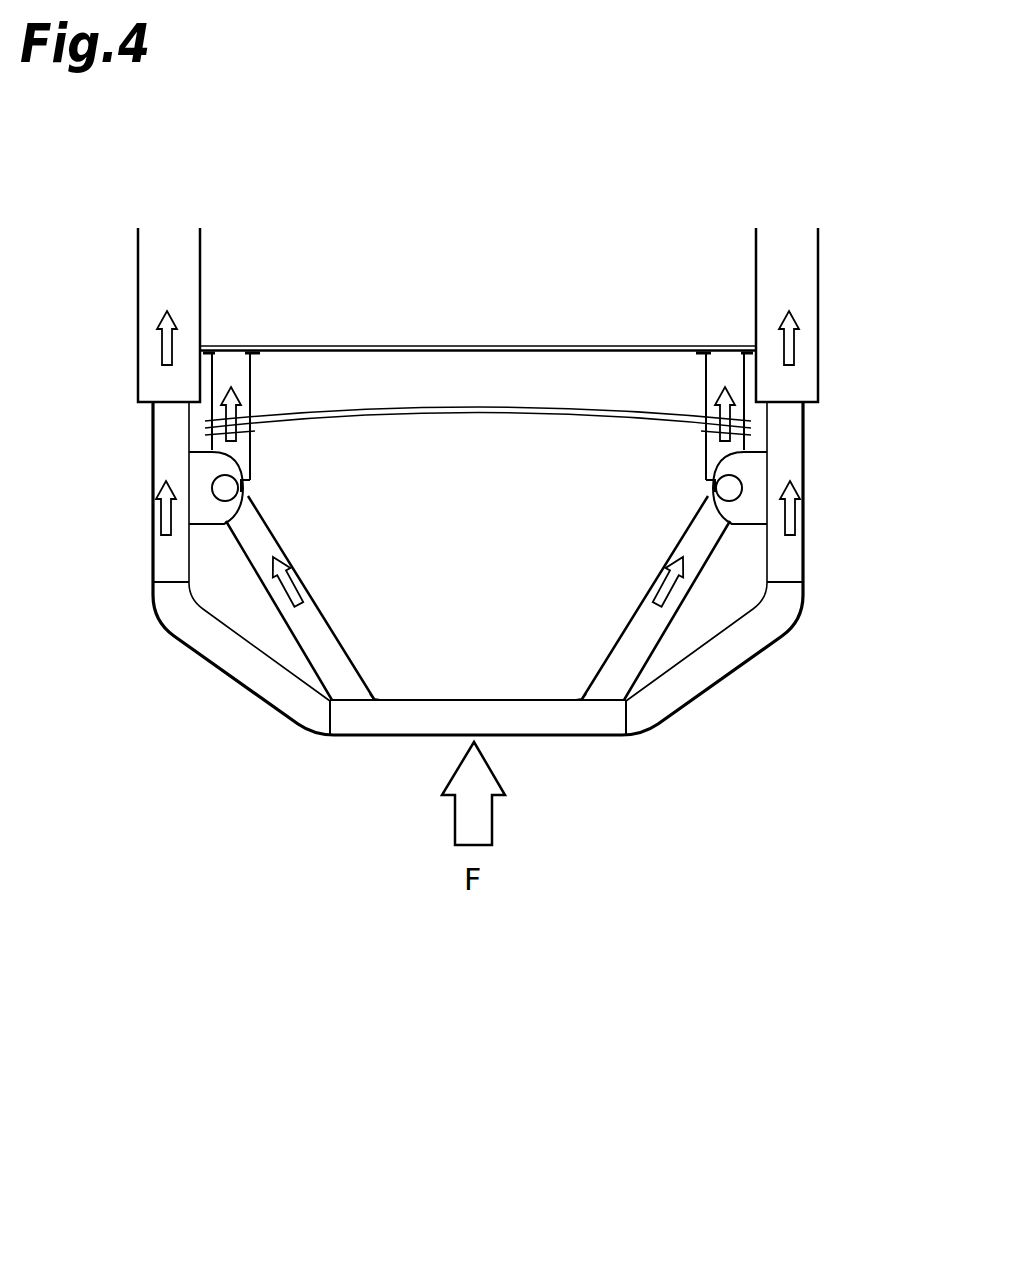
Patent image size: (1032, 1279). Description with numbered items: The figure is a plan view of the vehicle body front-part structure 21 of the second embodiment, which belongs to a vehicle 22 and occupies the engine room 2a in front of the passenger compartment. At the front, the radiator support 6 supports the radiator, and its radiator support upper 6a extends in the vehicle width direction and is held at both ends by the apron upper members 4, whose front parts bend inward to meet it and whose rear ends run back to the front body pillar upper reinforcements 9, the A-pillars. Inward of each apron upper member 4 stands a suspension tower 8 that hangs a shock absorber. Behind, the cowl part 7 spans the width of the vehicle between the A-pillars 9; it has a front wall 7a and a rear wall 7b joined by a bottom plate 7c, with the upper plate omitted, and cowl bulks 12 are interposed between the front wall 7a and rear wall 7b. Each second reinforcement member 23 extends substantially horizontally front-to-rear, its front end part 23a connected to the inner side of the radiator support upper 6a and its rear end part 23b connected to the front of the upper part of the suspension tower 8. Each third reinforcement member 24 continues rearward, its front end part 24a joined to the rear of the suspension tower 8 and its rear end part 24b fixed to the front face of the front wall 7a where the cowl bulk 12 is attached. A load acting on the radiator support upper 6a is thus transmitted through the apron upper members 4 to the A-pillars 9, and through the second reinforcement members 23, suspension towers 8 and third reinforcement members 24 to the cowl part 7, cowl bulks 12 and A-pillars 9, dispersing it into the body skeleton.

The engine room 2a is at (755, 673).
The apron upper member 4 is at (180, 618).
The radiator support 6 is at (445, 742).
The radiator support upper 6a is at (503, 723).
The cowl part 7 is at (538, 328).
The front wall 7a is at (487, 414).
The rear wall 7b is at (480, 346).
The bottom plate 7c is at (443, 380).
The suspension tower 8 is at (203, 467).
The front body pillar upper reinforcement 9 is at (148, 387).
The cowl bulk 12 is at (237, 385).
The vehicle body front-part structure 21 is at (370, 933).
The vehicle 22 is at (303, 1083).
The second reinforcement member 23 is at (327, 643).
The front end part 23a is at (355, 702).
The rear end part 23b is at (257, 503).
The third reinforcement member 24 is at (251, 455).
The front end part 24a is at (253, 500).
The rear end part 24b is at (250, 443).